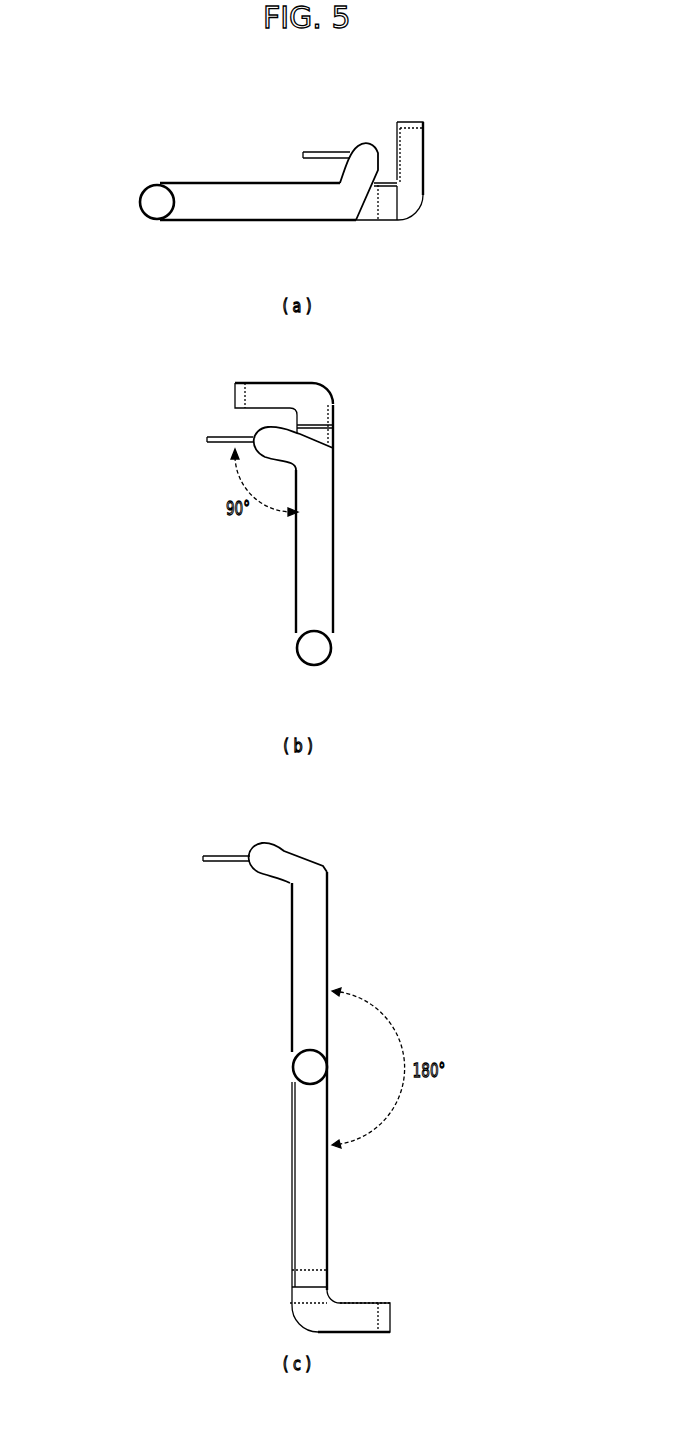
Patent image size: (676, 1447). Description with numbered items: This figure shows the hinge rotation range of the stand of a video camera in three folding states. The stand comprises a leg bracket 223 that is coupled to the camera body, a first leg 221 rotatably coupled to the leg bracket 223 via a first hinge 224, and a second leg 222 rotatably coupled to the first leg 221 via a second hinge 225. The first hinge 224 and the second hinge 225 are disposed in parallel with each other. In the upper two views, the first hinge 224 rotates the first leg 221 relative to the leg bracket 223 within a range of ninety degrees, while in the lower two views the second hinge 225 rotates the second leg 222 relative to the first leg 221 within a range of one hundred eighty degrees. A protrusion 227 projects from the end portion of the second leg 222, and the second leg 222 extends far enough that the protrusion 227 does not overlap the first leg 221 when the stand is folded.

The first leg 221 is at (199, 193).
The second leg 222 is at (372, 207).
The leg bracket 223 is at (320, 152).
The first hinge 224 is at (365, 152).
The second hinge 225 is at (155, 210).
The protrusion 227 is at (413, 155).